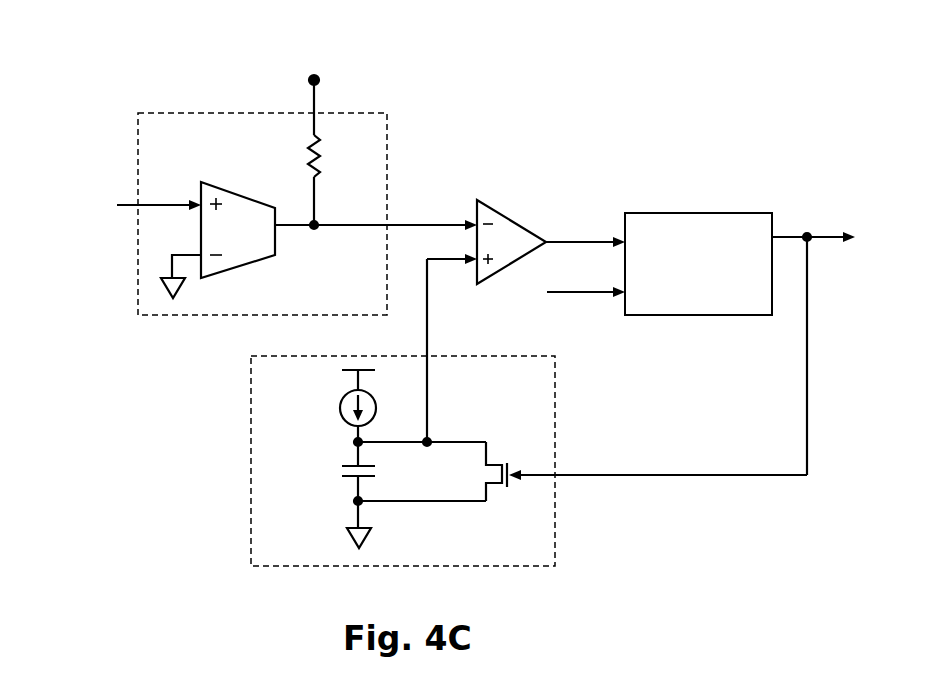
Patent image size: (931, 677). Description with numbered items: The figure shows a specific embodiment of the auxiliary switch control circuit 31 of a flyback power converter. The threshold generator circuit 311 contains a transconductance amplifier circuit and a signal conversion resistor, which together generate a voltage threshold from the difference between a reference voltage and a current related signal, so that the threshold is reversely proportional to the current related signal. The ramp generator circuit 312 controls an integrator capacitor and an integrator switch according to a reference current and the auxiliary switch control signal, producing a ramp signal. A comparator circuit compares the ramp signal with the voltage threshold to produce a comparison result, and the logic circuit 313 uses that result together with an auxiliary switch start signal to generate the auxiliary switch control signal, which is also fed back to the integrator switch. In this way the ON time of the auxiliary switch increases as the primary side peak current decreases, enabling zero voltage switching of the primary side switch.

The auxiliary switch control circuit 31 is at (97, 53).
The threshold generator circuit 311 is at (366, 307).
The ramp generator circuit 312 is at (524, 556).
The logic circuit 313 is at (719, 298).